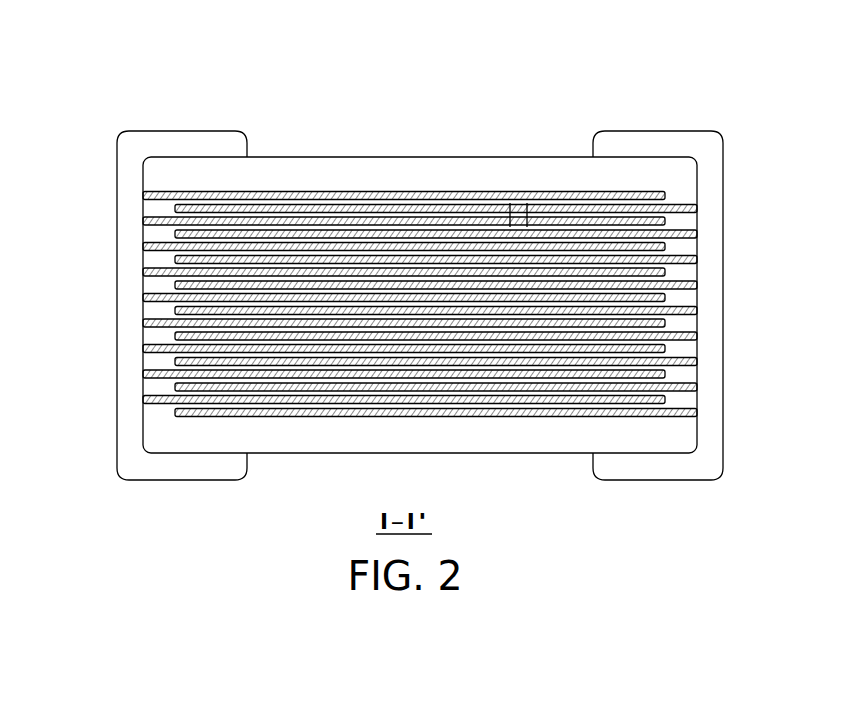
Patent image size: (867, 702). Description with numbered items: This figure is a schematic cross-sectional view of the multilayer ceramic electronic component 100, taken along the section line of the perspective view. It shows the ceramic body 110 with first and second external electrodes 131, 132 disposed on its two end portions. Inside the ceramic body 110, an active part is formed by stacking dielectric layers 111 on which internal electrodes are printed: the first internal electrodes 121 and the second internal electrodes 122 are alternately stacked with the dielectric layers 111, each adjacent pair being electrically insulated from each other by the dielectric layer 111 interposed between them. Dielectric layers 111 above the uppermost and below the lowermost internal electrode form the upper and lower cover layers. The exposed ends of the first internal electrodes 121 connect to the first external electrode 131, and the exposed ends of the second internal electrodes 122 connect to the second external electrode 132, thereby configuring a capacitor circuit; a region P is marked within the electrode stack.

The multilayer ceramic electronic component 100 is at (430, 28).
The ceramic body 110 is at (305, 157).
The dielectric layer 111 is at (665, 196).
The first internal electrode 121 is at (160, 218).
The second internal electrode 122 is at (673, 235).
The first external electrode 131 is at (137, 148).
The second external electrode 132 is at (638, 142).
The region P is at (522, 200).